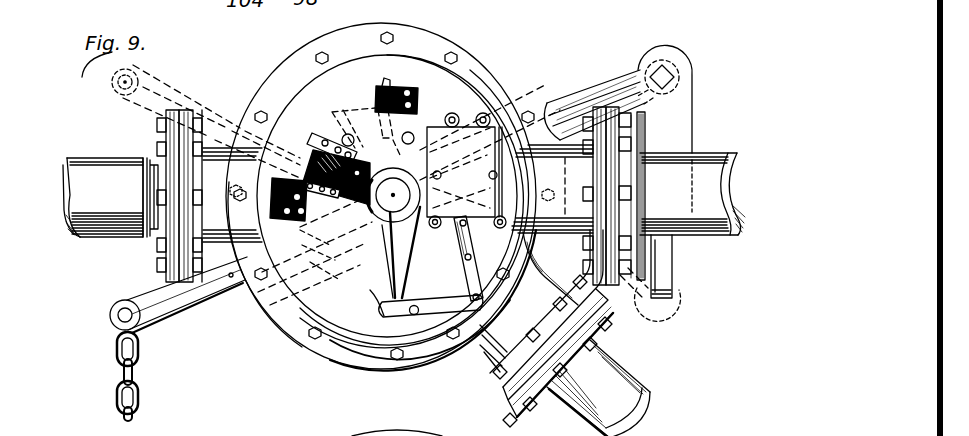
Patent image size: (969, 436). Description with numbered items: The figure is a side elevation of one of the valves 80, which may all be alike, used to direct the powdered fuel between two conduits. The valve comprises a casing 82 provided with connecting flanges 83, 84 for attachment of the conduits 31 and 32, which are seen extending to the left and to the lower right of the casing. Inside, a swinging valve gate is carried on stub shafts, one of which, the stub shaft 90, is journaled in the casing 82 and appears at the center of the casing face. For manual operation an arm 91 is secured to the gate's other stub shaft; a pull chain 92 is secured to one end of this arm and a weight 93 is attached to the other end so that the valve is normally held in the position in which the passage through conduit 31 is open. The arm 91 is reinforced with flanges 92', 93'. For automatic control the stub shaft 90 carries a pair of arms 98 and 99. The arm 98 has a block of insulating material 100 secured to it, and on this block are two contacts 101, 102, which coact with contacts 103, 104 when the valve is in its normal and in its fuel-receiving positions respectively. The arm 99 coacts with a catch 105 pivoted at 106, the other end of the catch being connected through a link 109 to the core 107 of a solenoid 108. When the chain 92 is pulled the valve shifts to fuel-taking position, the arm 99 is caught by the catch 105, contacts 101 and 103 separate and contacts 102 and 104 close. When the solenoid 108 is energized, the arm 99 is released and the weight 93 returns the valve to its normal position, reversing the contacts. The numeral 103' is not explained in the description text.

The conduit 31 is at (100, 238).
The conduit 32 is at (647, 402).
The valve 80 is at (271, 341).
The casing 82 is at (298, 297).
The connecting flange 83 is at (178, 130).
The connecting flange 84 is at (630, 256).
The stub shaft 90 is at (394, 193).
The arm 91 is at (184, 316).
The pull chain 92 is at (111, 376).
The flange 92' is at (222, 298).
The weight 93 is at (688, 99).
The flange 93' is at (594, 96).
The arm 98 is at (289, 353).
The arm 99 is at (383, 292).
The block of insulating material 100 is at (304, 122).
The contact 101 is at (345, 90).
The contact 102 is at (142, 236).
The contact 103 is at (416, 10).
The stop block 103' is at (454, 71).
The contact 104 is at (246, 212).
The catch 105 is at (394, 316).
The pivot 106 is at (420, 316).
The core 107 is at (461, 253).
The solenoid 108 is at (502, 128).
The link 109 is at (463, 275).